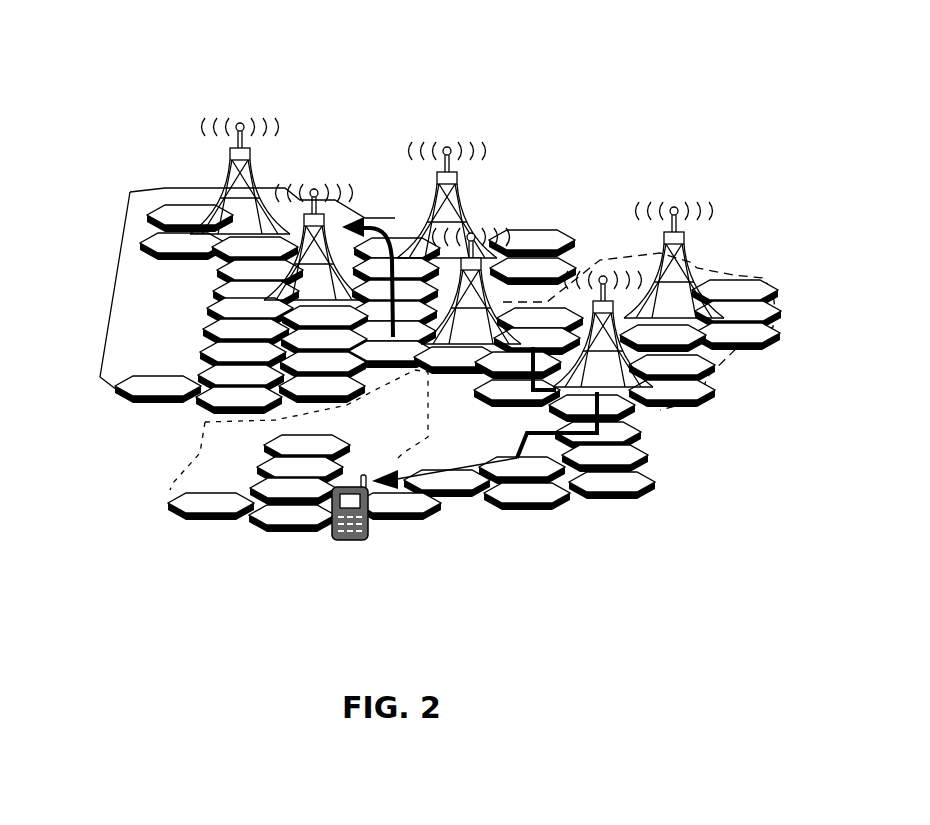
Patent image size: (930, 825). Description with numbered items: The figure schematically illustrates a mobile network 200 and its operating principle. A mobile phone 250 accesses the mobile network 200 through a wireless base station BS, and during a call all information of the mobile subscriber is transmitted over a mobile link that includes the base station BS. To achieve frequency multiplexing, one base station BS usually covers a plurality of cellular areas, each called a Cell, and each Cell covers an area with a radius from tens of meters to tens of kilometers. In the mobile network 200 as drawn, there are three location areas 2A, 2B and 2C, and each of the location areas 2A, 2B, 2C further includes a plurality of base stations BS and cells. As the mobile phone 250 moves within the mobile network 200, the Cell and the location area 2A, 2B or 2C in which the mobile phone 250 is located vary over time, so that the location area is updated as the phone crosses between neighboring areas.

The mobile network 200 is at (422, 23).
The location area 2A is at (120, 264).
The location area 2B is at (693, 410).
The location area 2C is at (274, 471).
The base station BS is at (253, 155).
The cell Cell is at (293, 513).
The mobile phone 250 is at (363, 540).